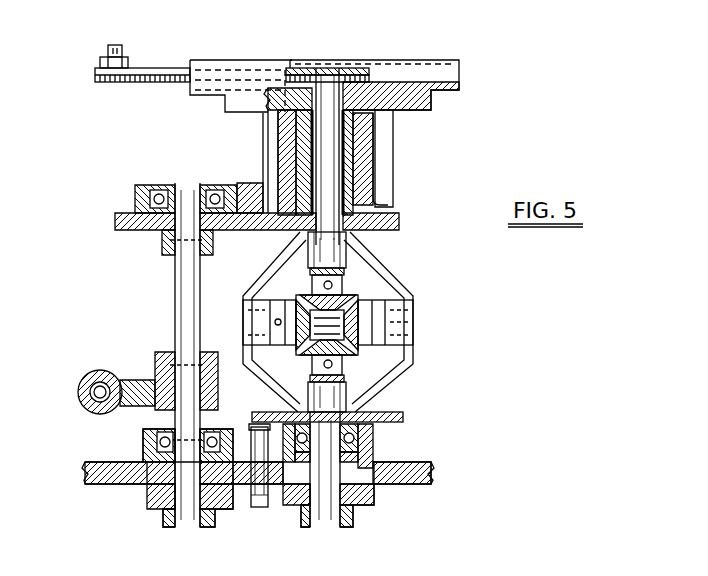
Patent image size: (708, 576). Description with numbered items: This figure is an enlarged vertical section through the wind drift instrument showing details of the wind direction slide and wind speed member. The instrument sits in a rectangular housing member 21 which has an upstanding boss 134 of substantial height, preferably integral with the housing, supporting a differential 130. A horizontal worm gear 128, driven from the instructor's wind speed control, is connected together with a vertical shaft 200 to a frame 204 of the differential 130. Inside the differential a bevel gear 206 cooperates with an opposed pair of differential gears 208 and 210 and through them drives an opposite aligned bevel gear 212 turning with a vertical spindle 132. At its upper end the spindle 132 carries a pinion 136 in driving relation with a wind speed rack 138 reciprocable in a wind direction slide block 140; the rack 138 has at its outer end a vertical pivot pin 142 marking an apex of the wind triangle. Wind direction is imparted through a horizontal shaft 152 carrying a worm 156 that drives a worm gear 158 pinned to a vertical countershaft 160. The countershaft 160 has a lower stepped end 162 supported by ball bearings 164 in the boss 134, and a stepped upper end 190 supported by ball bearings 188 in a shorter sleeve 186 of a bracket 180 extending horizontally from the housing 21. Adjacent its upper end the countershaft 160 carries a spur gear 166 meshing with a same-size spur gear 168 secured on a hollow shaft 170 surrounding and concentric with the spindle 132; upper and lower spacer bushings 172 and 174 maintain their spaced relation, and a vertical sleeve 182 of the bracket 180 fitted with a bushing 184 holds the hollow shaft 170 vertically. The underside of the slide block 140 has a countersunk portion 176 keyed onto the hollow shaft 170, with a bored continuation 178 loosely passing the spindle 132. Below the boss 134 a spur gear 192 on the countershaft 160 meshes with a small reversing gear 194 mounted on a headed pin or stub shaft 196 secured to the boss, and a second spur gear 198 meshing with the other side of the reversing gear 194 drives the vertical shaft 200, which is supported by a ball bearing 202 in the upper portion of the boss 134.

The housing member 21 is at (408, 486).
The worm gear 128 is at (395, 413).
The differential 130 is at (412, 324).
The vertical spindle 132 is at (360, 136).
The boss 134 is at (374, 442).
The pinion 136 is at (322, 68).
The wind speed rack 138 is at (95, 70).
The wind direction slide block 140 is at (236, 60).
The vertical pivot pin 142 is at (126, 57).
The horizontal shaft 152 is at (130, 380).
The worm 156 is at (82, 380).
The worm gear 158 is at (155, 380).
The countershaft 160 is at (185, 268).
The lower stepped end 162 is at (185, 527).
The ball bearings 164 is at (157, 441).
The spur gear 166 is at (142, 230).
The spur gear 168 is at (275, 231).
The hollow shaft 170 is at (380, 152).
The upper spacer bushing 172 is at (263, 118).
The lower spacer bushing 174 is at (350, 235).
The countersunk portion 176 is at (378, 86).
The bored continuation 178 is at (370, 68).
The bracket 180 is at (263, 150).
The vertical sleeve 182 is at (388, 187).
The bushing 184 is at (365, 170).
The sleeve 186 is at (238, 184).
The ball bearings 188 is at (155, 185).
The stepped upper end 190 is at (182, 186).
The spur gear 192 is at (162, 500).
The reversing gear 194 is at (237, 510).
The headed pin or stub shaft 196 is at (262, 507).
The second spur gear 198 is at (357, 506).
The vertical shaft 200 is at (330, 468).
The ball bearing 202 is at (376, 430).
The frame 204 is at (384, 376).
The bevel gear 206 is at (348, 364).
The differential gear 208 is at (270, 302).
The differential gear 210 is at (412, 306).
The bevel gear 212 is at (345, 285).